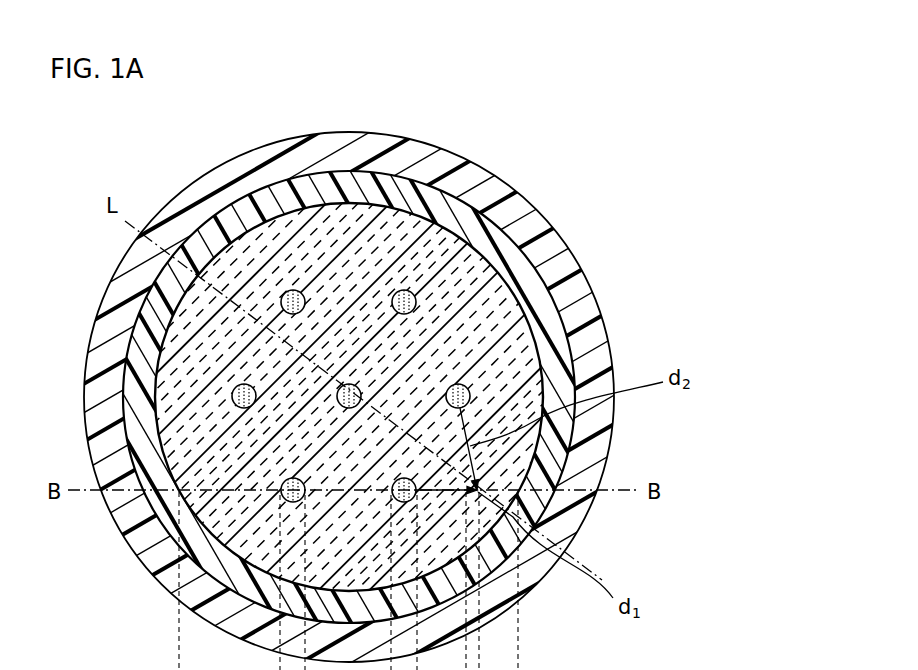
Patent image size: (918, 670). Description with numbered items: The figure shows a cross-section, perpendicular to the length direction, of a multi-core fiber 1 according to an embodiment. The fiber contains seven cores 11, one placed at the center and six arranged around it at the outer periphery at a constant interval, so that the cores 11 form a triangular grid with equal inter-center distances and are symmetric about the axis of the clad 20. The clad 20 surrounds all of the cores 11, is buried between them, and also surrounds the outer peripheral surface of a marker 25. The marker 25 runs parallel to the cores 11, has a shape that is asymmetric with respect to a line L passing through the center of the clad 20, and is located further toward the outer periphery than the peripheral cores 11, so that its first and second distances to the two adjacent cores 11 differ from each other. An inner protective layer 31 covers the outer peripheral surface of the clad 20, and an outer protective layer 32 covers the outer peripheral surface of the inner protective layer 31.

The multi-core fiber 1 is at (614, 124).
The core 11 is at (288, 291).
The clad 20 is at (447, 208).
The marker 25 is at (480, 488).
The inner protective layer 31 is at (557, 353).
The outer protective layer 32 is at (562, 273).